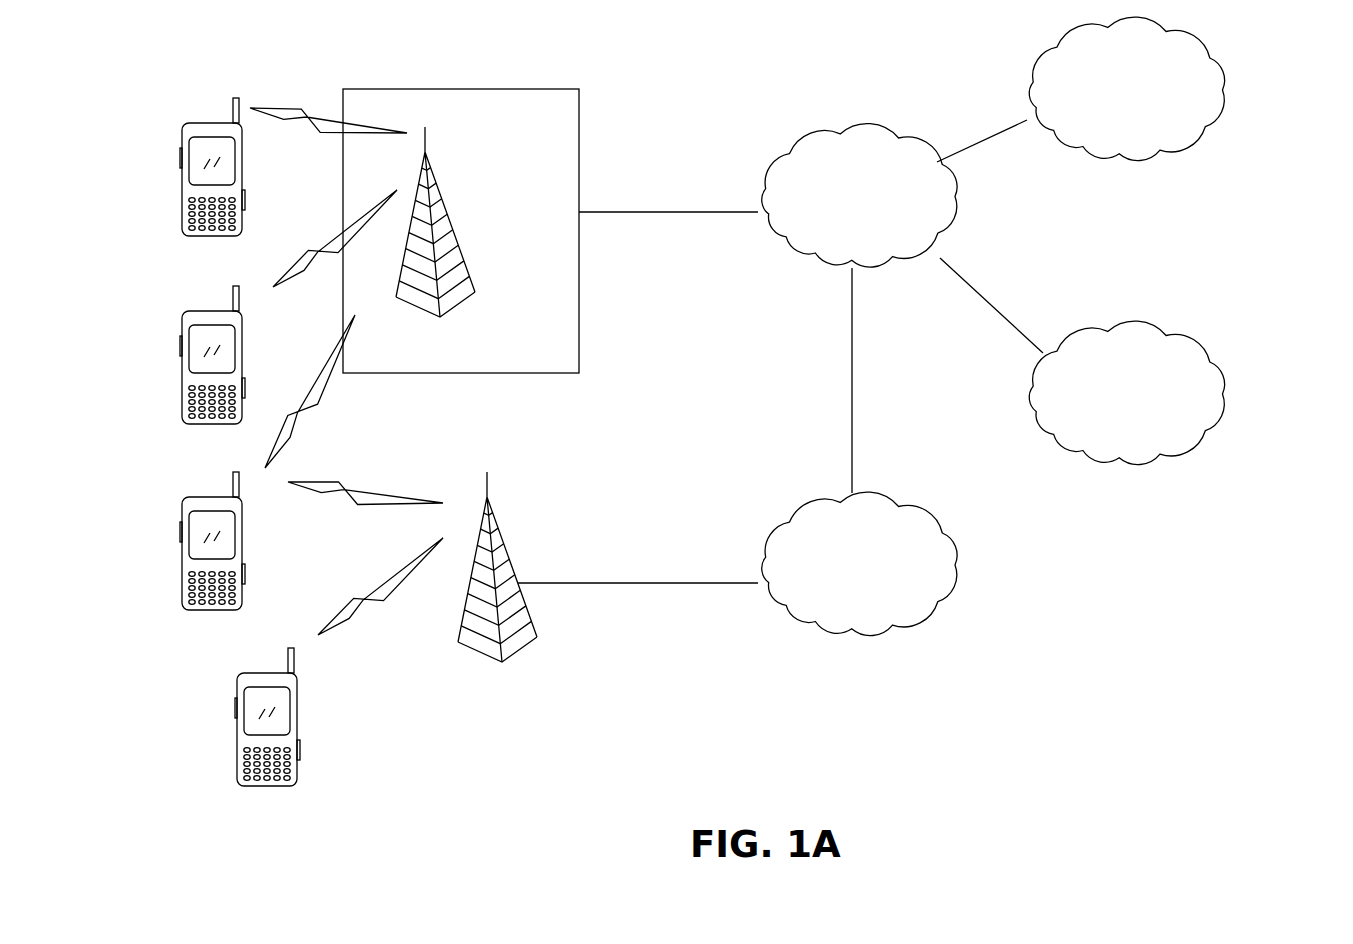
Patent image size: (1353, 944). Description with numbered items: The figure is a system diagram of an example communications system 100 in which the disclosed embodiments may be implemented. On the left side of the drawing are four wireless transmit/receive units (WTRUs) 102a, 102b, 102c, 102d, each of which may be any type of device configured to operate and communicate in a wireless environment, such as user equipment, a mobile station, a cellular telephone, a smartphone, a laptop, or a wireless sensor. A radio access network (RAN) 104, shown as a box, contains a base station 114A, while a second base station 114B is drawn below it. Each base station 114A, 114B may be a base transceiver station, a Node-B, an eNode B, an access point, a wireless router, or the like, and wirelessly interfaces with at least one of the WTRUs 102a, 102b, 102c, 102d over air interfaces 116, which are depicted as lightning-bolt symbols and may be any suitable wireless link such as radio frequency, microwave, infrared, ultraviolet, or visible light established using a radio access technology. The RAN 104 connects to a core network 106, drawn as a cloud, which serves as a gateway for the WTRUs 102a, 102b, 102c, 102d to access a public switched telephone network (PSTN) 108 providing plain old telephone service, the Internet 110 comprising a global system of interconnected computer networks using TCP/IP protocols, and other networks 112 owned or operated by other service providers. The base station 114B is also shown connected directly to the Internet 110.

The communications system 100 is at (738, 419).
The wireless transmit/receive unit (WTRU) 102a is at (222, 237).
The wireless transmit/receive unit (WTRU) 102b is at (222, 424).
The wireless transmit/receive unit (WTRU) 102c is at (222, 610).
The wireless transmit/receive unit (WTRU) 102d is at (268, 786).
The radio access network (RAN) 104 is at (440, 89).
The core network 106 is at (868, 125).
The public switched telephone network (PSTN) 108 is at (1177, 162).
The Internet 110 is at (883, 493).
The other networks 112 is at (1152, 323).
The base station 114A is at (440, 317).
The base station 114B is at (503, 660).
The air interface 116 is at (283, 118).